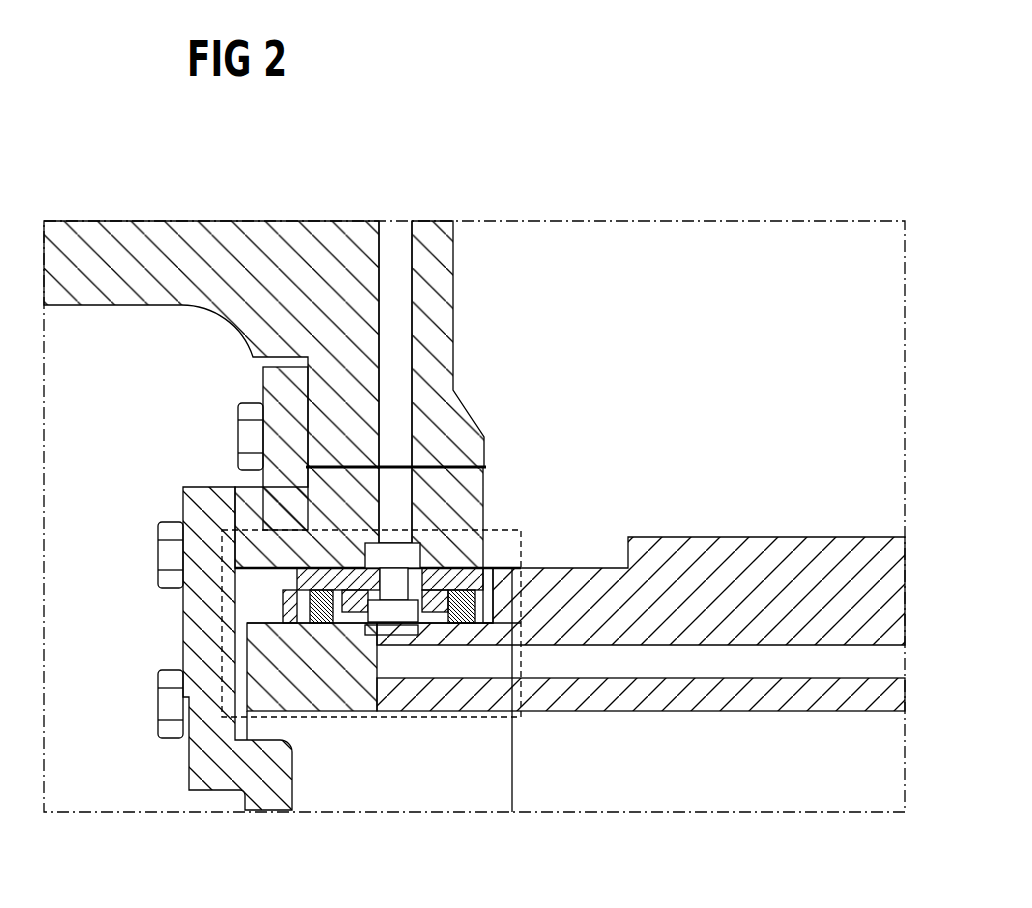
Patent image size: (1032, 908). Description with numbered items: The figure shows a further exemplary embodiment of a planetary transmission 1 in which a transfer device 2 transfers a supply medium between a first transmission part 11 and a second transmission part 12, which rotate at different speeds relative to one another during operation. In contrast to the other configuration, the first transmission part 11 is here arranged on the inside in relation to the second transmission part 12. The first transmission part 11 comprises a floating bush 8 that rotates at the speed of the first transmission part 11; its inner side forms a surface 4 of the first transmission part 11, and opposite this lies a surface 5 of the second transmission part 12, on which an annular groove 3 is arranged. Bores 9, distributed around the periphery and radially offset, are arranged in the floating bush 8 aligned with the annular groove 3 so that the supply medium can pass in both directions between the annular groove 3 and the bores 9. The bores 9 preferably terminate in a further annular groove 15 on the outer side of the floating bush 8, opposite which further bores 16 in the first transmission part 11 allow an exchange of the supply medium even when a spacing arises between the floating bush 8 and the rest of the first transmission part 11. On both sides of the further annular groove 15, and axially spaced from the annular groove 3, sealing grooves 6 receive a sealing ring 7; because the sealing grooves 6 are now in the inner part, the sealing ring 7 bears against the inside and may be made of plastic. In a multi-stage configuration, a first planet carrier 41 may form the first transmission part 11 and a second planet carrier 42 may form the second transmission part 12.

The planetary transmission 1 is at (790, 160).
The transfer device 2 is at (262, 440).
The annular groove 3 is at (418, 555).
The surface of the first transmission part 4 is at (330, 560).
The surface of the second transmission part 5 is at (437, 627).
The sealing groove 6 is at (300, 602).
The sealing ring 7 is at (325, 625).
The floating bush 8 is at (300, 580).
The bore 9 is at (402, 562).
The first transmission part 11 is at (812, 757).
The second transmission part 12 is at (138, 212).
The further annular groove 15 is at (383, 605).
The further bore 16 is at (407, 632).
The first planet carrier 41 is at (710, 688).
The second planet carrier 42 is at (135, 287).